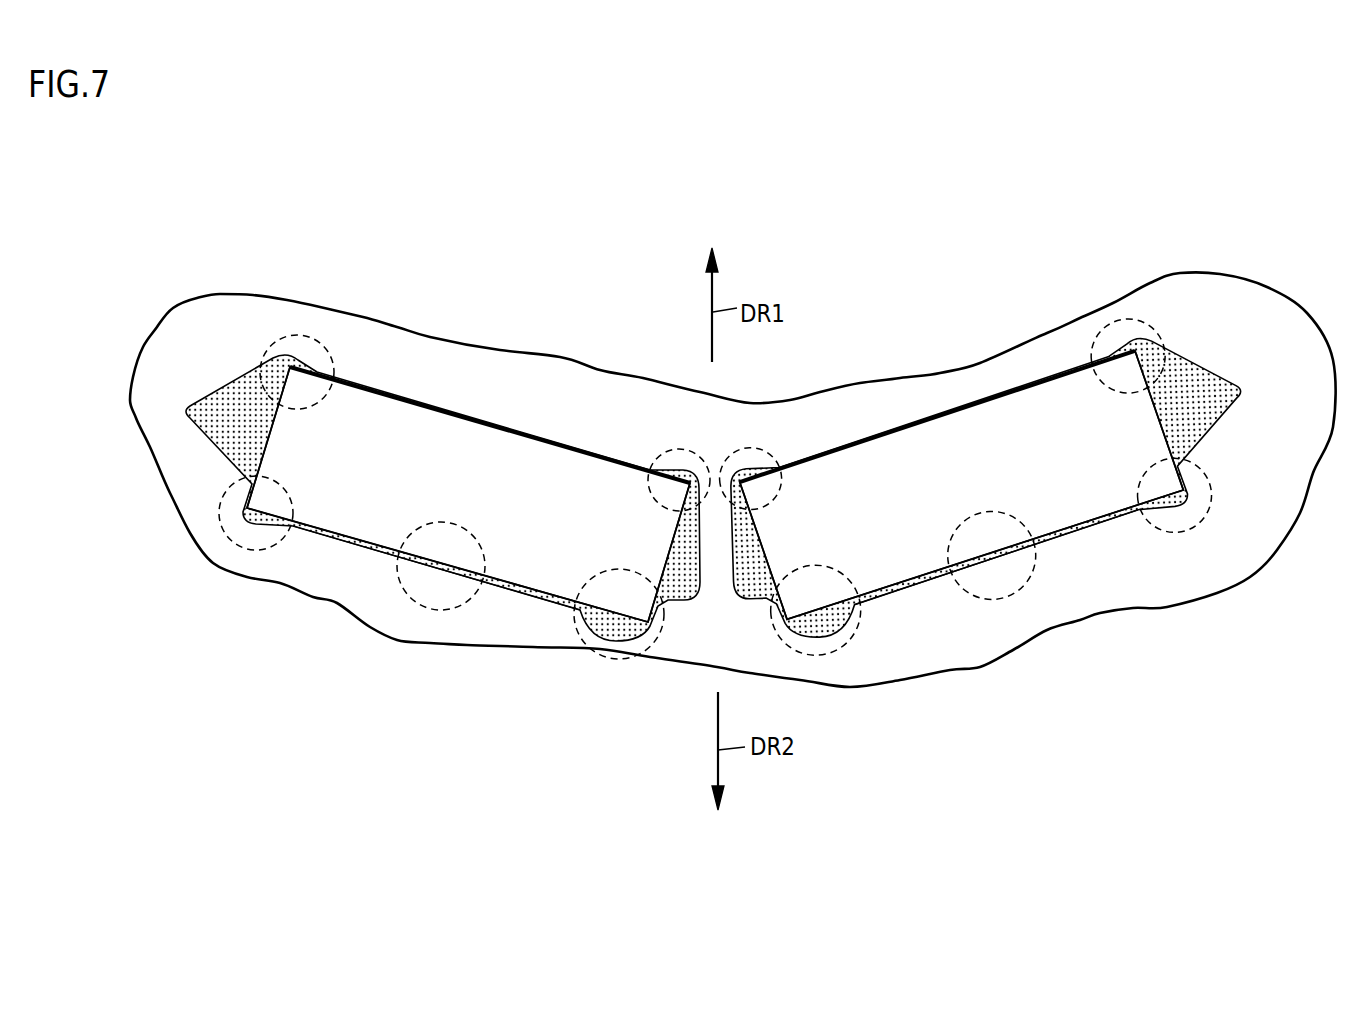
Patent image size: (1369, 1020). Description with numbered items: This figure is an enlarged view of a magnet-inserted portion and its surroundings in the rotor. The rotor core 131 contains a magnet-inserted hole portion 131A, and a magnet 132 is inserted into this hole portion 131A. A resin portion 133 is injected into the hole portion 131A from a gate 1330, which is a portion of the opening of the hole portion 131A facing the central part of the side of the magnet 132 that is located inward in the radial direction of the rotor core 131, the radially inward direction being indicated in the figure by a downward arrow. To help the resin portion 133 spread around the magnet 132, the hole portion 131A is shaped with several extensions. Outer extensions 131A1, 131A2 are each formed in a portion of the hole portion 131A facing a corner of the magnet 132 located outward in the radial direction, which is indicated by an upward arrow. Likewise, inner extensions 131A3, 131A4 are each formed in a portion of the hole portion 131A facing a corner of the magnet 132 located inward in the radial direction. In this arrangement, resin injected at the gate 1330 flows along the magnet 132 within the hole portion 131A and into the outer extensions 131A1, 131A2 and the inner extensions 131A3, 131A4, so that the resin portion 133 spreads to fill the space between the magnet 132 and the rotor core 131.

The rotor core 131 is at (253, 295).
The magnet 132 is at (470, 460).
The resin portion 133 is at (233, 403).
The magnet-inserted hole portion 131A is at (350, 534).
The outer extension 131A1 is at (678, 452).
The outer extension 131A2 is at (303, 335).
The inner extension 131A3 is at (238, 545).
The inner extension 131A4 is at (592, 650).
The gate 1330 is at (413, 603).